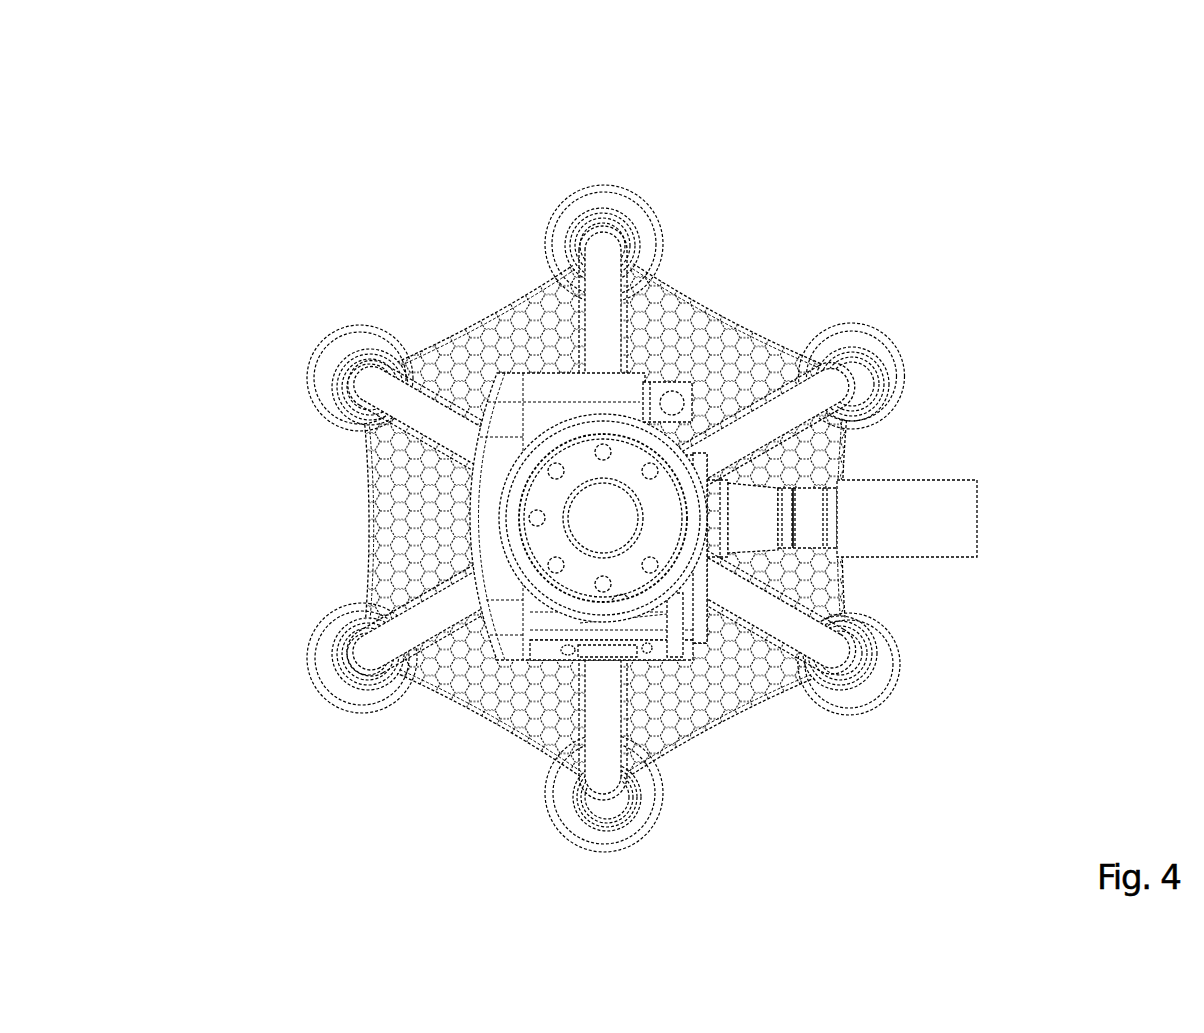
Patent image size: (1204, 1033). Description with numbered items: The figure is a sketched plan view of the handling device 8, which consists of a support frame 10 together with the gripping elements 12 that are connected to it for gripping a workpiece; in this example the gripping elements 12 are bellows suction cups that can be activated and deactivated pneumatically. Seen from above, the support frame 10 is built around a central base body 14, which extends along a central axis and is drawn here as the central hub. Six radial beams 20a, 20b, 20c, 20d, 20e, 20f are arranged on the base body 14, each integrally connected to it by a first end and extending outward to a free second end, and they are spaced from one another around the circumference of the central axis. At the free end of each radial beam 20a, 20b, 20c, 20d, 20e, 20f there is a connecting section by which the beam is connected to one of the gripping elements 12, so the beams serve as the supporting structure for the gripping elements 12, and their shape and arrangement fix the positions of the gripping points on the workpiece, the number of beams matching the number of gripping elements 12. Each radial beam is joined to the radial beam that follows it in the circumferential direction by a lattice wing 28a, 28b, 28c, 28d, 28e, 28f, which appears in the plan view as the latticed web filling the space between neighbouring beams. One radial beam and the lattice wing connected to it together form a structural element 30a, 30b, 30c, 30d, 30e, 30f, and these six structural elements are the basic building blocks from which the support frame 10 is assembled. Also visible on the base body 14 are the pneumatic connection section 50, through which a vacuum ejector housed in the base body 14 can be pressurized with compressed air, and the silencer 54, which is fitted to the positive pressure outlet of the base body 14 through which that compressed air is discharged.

The handling device 8 is at (609, 100).
The support frame 10 is at (424, 262).
The gripping element 12 is at (888, 694).
The base body 14 is at (520, 525).
The radial beam 20a is at (607, 740).
The radial beam 20b is at (818, 640).
The radial beam 20c is at (824, 384).
The radial beam 20d is at (600, 282).
The radial beam 20e is at (385, 397).
The radial beam 20f is at (387, 648).
The lattice wing 28a is at (660, 737).
The lattice wing 28b is at (835, 602).
The lattice wing 28c is at (786, 358).
The lattice wing 28d is at (567, 275).
The lattice wing 28e is at (366, 425).
The lattice wing 28f is at (408, 668).
The structural element 30a is at (770, 777).
The structural element 30b is at (990, 575).
The structural element 30c is at (793, 242).
The structural element 30d is at (467, 167).
The structural element 30e is at (217, 395).
The structural element 30f is at (317, 780).
The pneumatic connection section 50 is at (675, 396).
The silencer 54 is at (947, 489).